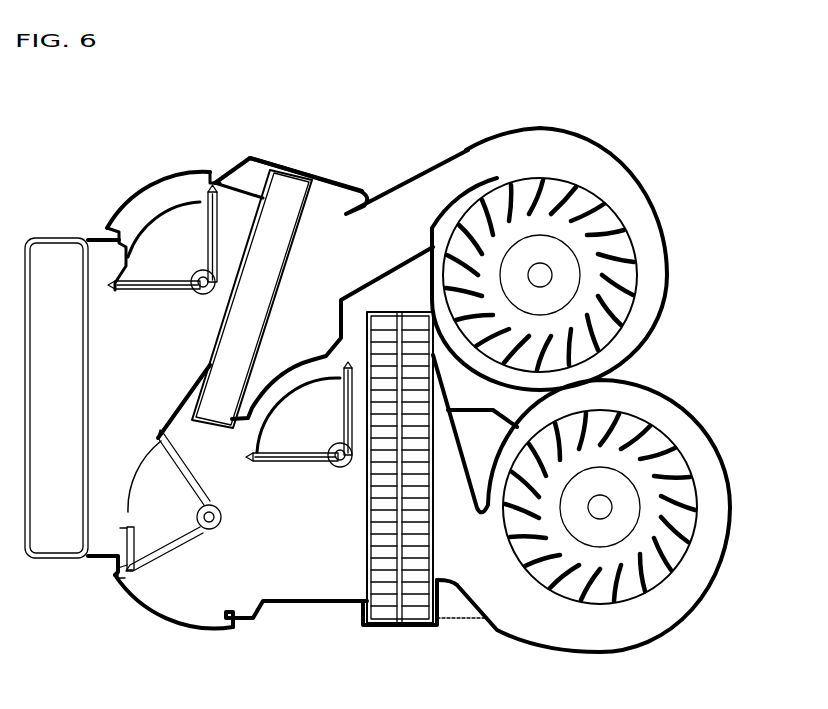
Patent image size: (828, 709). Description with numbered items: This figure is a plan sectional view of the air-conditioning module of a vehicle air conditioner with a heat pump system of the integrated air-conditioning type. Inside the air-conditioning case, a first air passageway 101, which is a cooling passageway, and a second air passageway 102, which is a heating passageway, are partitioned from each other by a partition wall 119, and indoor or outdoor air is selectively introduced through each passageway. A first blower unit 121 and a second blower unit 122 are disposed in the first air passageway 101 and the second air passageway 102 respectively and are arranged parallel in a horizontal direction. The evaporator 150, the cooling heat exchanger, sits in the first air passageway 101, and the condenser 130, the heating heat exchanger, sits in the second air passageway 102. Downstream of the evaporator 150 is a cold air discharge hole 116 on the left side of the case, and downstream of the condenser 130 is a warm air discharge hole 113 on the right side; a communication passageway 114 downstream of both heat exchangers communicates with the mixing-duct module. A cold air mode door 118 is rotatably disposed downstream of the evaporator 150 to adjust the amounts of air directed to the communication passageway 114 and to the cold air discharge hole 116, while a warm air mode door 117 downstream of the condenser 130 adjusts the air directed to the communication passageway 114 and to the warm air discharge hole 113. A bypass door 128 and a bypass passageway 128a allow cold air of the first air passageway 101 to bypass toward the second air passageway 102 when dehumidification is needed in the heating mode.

The first air passageway 101 is at (310, 547).
The second air passageway 102 is at (332, 268).
The warm air discharge hole 113 is at (167, 191).
The communication passageway 114 is at (54, 532).
The cold air discharge hole 116 is at (180, 614).
The warm air mode door 117 is at (217, 220).
The cold air mode door 118 is at (155, 563).
The partition wall 119 is at (383, 225).
The first blower unit 121 is at (683, 522).
The second blower unit 122 is at (648, 264).
The bypass door 128 is at (273, 465).
The bypass passageway 128a is at (278, 397).
The condenser 130 is at (273, 223).
The evaporator 150 is at (385, 580).